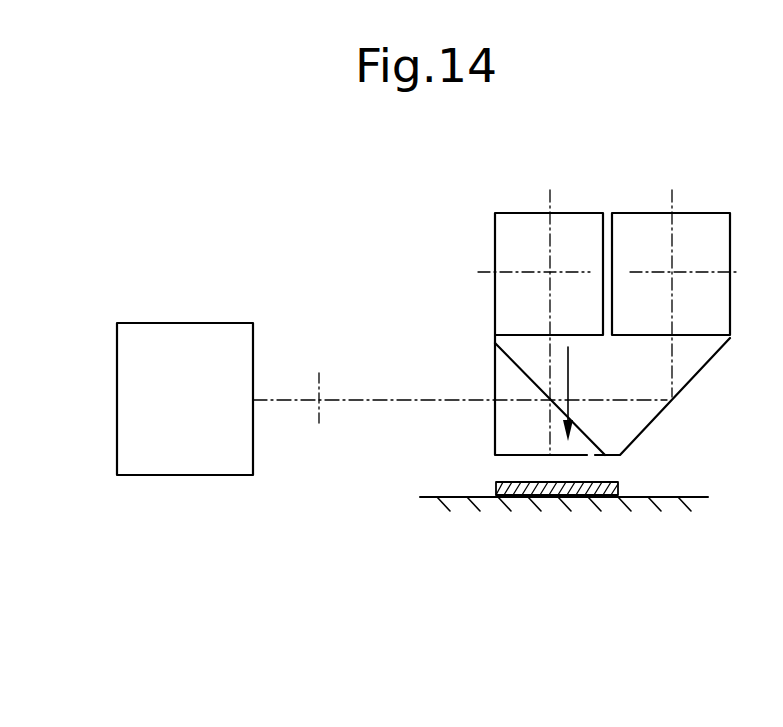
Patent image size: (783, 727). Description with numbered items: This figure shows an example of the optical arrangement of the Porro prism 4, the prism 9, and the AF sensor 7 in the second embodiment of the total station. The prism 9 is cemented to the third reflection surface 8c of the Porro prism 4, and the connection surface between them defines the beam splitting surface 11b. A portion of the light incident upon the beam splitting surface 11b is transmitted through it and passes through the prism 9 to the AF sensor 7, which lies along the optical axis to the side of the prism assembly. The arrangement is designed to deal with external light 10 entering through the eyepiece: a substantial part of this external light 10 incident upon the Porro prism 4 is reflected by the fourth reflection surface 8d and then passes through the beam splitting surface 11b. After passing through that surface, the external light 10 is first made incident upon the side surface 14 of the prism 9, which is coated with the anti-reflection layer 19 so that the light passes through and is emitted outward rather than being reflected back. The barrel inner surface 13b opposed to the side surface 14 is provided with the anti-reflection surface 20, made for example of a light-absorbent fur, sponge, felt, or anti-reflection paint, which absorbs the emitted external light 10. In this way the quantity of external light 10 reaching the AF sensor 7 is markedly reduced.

The AF sensor 7 is at (191, 345).
The Porro prism 4 is at (489, 206).
The fourth reflection surface 8d is at (575, 235).
The beam splitting surface 11b is at (505, 372).
The prism 9 is at (500, 365).
The third reflection surface 8c is at (550, 400).
The external light 10 is at (637, 437).
The anti-reflection layer 19 is at (503, 457).
The anti-reflection surface 20 is at (495, 482).
The side surface 14 is at (587, 457).
The barrel inner surface 13b is at (693, 500).